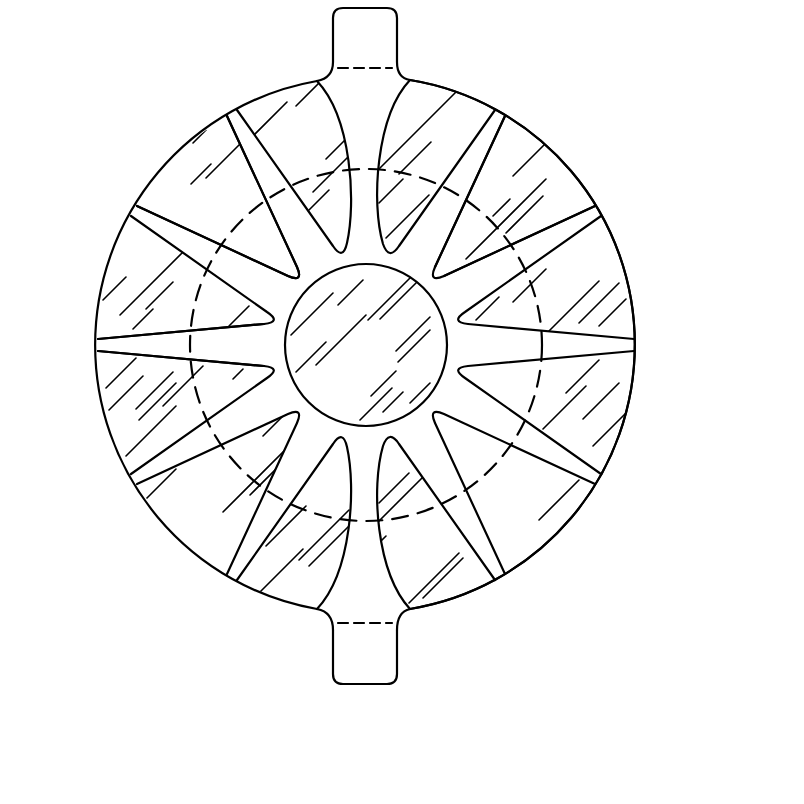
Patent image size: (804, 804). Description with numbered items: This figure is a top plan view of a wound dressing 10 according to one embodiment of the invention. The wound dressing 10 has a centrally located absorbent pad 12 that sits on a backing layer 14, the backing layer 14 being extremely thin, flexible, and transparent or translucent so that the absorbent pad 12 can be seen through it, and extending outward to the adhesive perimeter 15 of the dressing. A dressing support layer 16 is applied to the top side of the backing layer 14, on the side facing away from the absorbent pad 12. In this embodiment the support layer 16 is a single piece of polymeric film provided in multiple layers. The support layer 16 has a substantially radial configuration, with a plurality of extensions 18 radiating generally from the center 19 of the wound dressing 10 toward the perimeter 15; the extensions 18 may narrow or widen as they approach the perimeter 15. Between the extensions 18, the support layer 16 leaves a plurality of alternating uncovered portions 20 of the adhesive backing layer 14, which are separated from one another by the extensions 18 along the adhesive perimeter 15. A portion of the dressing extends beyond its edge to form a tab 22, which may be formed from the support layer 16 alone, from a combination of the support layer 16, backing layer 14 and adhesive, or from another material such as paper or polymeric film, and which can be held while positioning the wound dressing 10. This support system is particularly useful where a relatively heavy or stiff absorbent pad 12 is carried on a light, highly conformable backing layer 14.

The wound dressing 10 is at (150, 71).
The absorbent pad 12 is at (475, 457).
The backing layer 14 is at (613, 380).
The perimeter 15 is at (563, 158).
The dressing support layer 16 is at (573, 233).
The extensions 18 is at (122, 342).
The center 19 is at (320, 393).
The uncovered portions 20 is at (180, 192).
The tab 22 is at (397, 33).